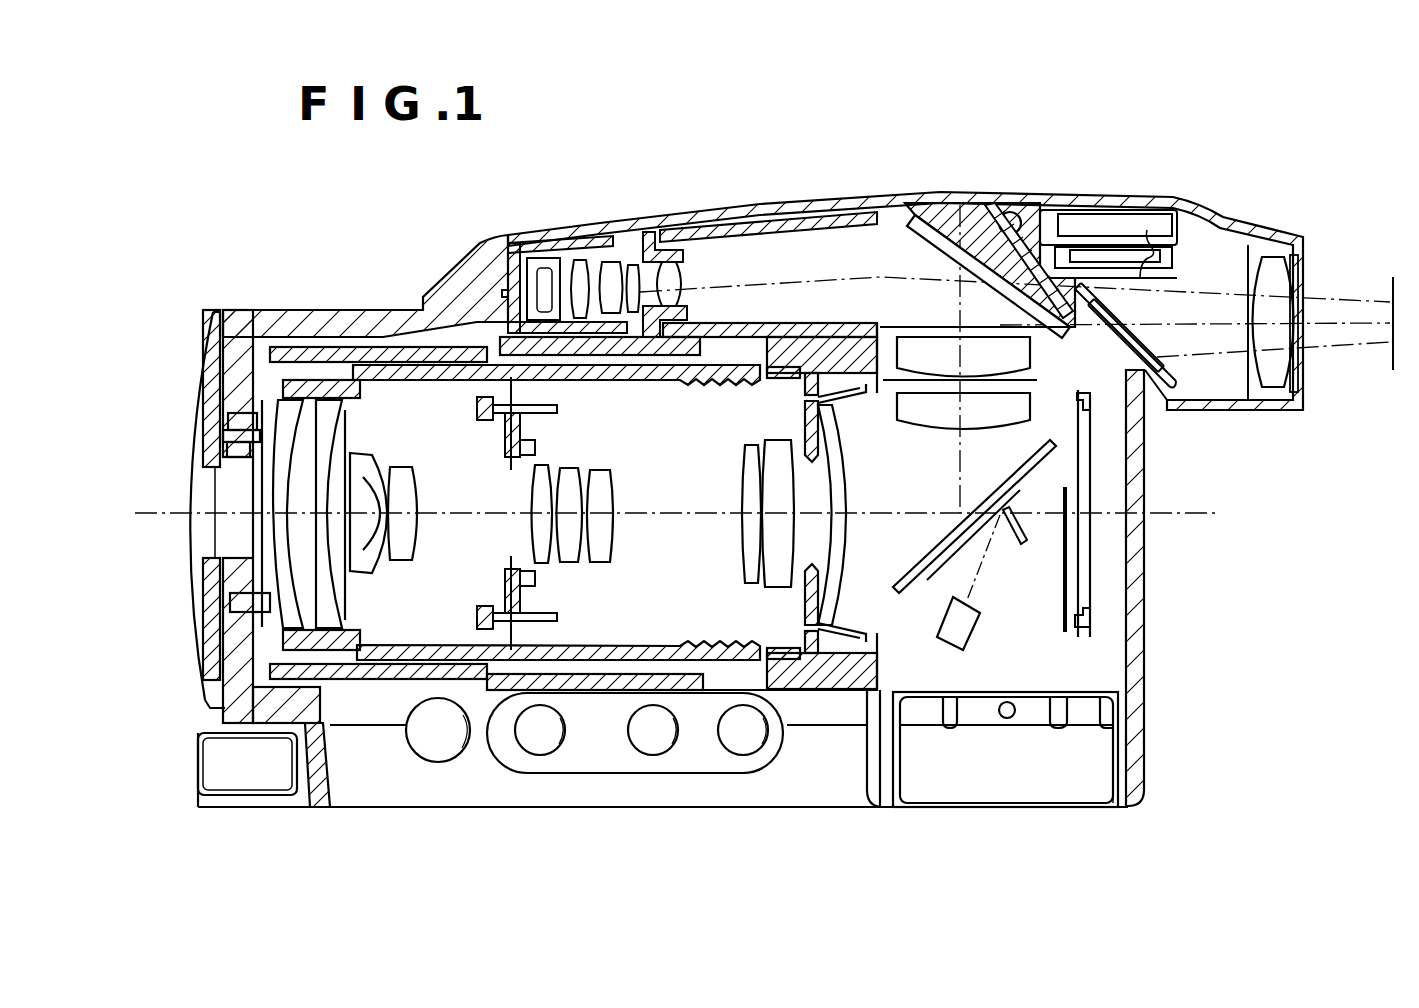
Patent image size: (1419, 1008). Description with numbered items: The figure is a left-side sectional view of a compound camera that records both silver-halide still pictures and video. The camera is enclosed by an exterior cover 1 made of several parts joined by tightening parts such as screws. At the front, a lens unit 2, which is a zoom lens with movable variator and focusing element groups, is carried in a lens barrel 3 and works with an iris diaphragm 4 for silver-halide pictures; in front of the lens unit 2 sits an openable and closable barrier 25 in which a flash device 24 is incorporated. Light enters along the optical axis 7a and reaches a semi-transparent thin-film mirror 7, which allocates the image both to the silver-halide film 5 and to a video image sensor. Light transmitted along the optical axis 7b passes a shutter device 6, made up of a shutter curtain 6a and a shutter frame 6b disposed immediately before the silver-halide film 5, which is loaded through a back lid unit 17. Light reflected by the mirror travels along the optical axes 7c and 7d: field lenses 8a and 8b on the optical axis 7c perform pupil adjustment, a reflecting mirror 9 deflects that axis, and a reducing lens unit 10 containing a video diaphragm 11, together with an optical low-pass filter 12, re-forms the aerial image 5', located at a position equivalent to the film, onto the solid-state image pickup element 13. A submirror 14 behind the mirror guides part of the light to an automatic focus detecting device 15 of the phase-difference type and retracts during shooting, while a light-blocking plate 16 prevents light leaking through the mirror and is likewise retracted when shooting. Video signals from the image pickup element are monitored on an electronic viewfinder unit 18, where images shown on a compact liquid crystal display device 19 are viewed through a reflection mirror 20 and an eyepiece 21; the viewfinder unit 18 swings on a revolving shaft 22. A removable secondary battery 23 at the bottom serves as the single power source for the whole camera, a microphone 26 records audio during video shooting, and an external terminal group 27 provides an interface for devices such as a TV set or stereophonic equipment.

The exterior cover 1 is at (748, 207).
The lens unit 2 is at (393, 625).
The lens barrel 3 is at (668, 655).
The iris diaphragm 4 is at (510, 455).
The silver-halide film 5 is at (1143, 496).
The aerial image 5' is at (1063, 413).
The shutter device 6 is at (1207, 533).
The shutter curtain 6a is at (1085, 565).
The shutter frame 6b is at (1092, 620).
The semi-transparent thin-film mirror 7 is at (930, 560).
The optical axis 7a is at (905, 512).
The optical axis 7b is at (1047, 517).
The optical axis 7c is at (957, 443).
The optical axis 7d is at (840, 277).
The field lens 8a is at (973, 410).
The field lens 8b is at (1030, 352).
The reflecting mirror 9 is at (957, 255).
The reducing lens unit 10 is at (677, 280).
The video diaphragm 11 is at (630, 262).
The optical low-pass filter 12 is at (535, 262).
The solid-state image pickup element 13 is at (513, 275).
The submirror 14 is at (1003, 548).
The automatic focus detecting device 15 is at (958, 655).
The light-blocking plate 16 is at (1062, 603).
The back lid unit 17 is at (1135, 750).
The electronic viewfinder unit 18 is at (1228, 262).
The compact liquid crystal display device 19 is at (1137, 265).
The reflection mirror 20 is at (1150, 397).
The eyepiece 21 is at (1270, 290).
The revolving shaft 22 is at (1010, 212).
The secondary battery 23 is at (1052, 765).
The flash device 24 is at (205, 352).
The barrier 25 is at (192, 412).
The microphone 26 is at (258, 775).
The external terminal group 27 is at (695, 748).